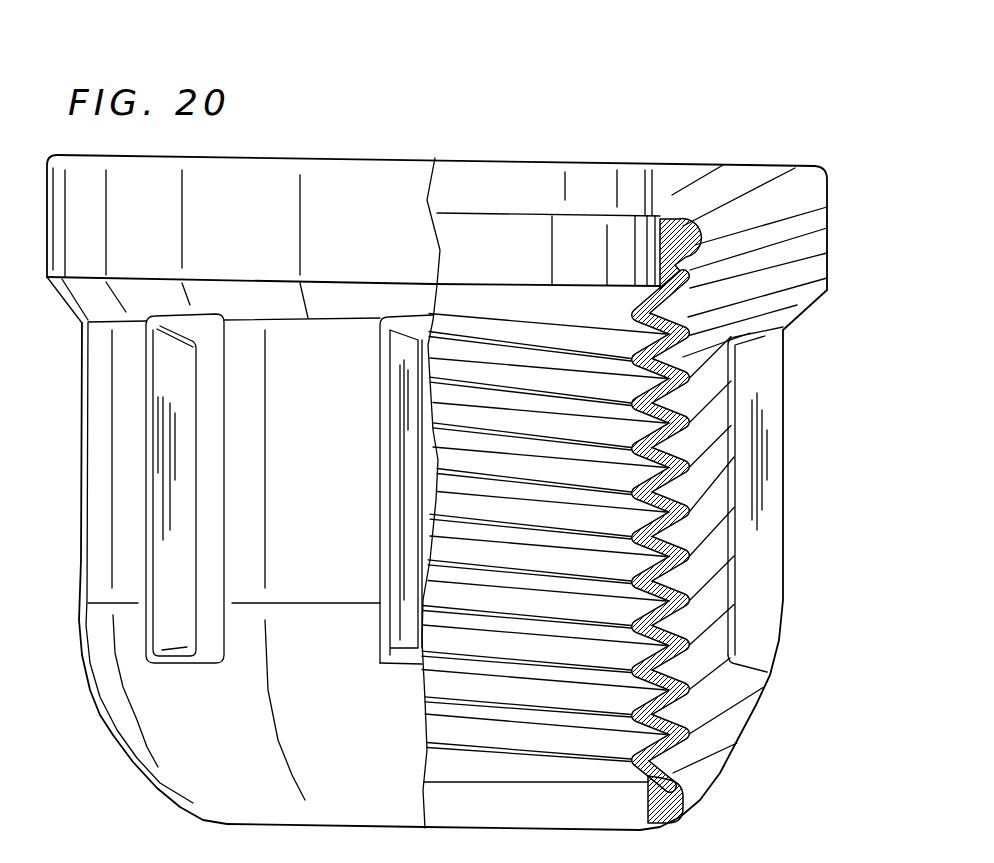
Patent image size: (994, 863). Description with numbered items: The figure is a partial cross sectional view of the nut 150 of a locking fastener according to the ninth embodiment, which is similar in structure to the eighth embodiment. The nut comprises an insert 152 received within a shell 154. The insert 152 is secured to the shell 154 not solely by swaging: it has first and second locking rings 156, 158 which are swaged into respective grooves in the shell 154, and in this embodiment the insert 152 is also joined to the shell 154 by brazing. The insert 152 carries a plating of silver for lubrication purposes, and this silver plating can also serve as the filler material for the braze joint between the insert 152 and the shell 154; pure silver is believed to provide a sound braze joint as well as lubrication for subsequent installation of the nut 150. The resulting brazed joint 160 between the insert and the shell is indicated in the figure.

The nut 150 is at (683, 118).
The insert 152 is at (668, 590).
The shell 154 is at (80, 478).
The first locking ring 156 is at (683, 222).
The second locking ring 158 is at (662, 808).
The brazed joint 160 is at (838, 229).